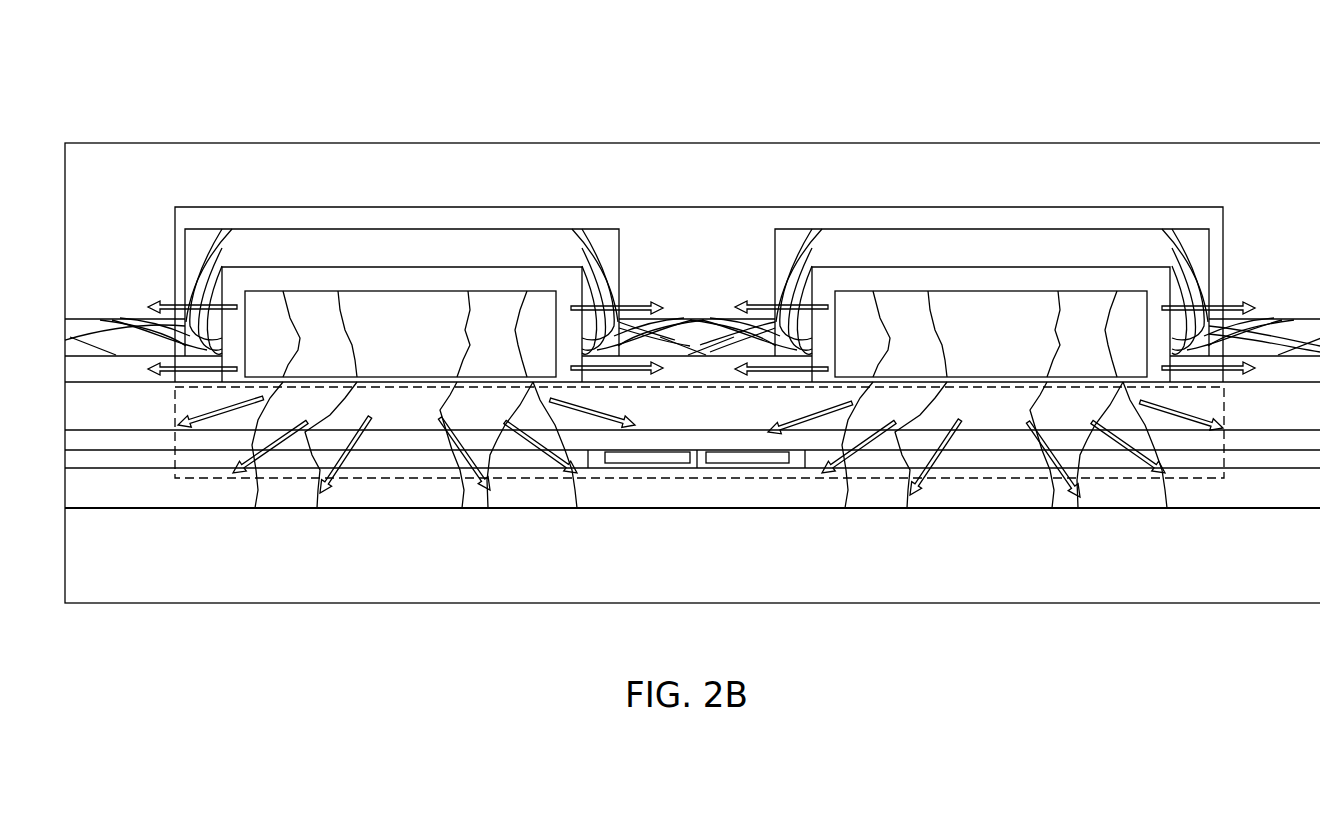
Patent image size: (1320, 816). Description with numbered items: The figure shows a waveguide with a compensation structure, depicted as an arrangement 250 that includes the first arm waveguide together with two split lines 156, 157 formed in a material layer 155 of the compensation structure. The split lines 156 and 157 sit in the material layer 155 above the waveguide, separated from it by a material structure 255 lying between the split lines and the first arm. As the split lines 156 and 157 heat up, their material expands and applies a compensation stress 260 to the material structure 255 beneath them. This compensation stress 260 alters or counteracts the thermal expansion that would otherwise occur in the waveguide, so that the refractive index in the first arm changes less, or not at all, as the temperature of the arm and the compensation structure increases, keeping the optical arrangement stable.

The arrangement 250 is at (1214, 106).
The material layer 155 is at (693, 207).
The split line 156 is at (415, 350).
The split line 157 is at (1005, 350).
The compensation stress 260 is at (423, 416).
The material structure 255 is at (1197, 478).